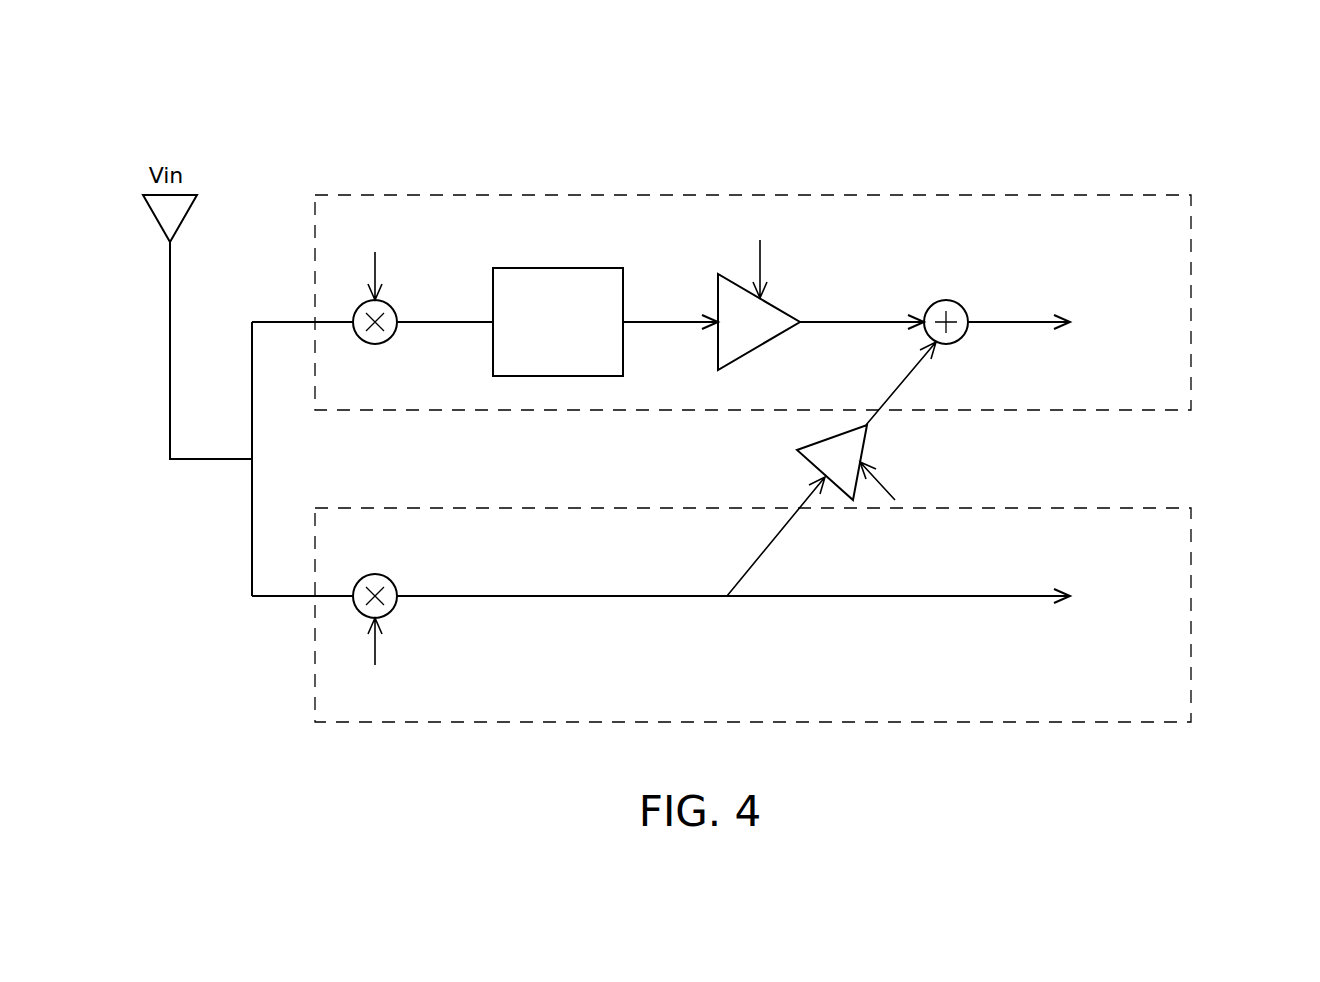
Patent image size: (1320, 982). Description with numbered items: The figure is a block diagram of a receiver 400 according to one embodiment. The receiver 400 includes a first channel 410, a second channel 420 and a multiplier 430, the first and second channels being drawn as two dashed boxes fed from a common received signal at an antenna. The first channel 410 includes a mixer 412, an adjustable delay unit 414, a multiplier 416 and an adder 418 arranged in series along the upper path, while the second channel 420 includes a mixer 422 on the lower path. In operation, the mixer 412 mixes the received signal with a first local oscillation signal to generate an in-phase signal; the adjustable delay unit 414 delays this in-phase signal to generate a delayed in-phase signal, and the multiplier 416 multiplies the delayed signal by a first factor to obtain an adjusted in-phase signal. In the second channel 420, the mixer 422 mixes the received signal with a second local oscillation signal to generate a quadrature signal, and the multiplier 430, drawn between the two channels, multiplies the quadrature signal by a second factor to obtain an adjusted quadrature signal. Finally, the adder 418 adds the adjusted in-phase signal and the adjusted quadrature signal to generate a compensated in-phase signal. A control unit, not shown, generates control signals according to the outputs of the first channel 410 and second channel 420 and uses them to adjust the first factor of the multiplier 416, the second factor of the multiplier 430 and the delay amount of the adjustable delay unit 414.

The receiver 400 is at (1105, 118).
The first channel 410 is at (1192, 237).
The mixer 412 is at (386, 342).
The adjustable delay unit 414 is at (556, 267).
The multiplier 416 is at (762, 350).
The adder 418 is at (962, 306).
The second channel 420 is at (1192, 550).
The mixer 422 is at (388, 578).
The multiplier 430 is at (814, 442).